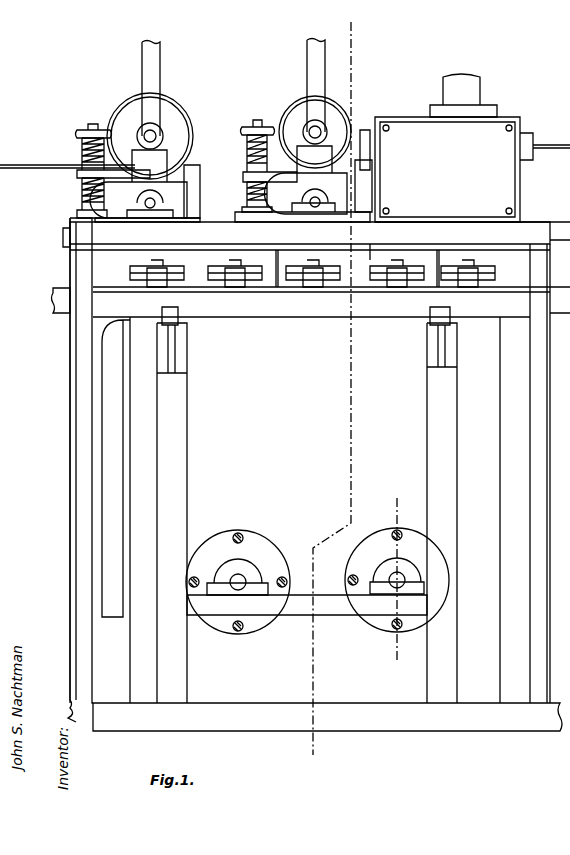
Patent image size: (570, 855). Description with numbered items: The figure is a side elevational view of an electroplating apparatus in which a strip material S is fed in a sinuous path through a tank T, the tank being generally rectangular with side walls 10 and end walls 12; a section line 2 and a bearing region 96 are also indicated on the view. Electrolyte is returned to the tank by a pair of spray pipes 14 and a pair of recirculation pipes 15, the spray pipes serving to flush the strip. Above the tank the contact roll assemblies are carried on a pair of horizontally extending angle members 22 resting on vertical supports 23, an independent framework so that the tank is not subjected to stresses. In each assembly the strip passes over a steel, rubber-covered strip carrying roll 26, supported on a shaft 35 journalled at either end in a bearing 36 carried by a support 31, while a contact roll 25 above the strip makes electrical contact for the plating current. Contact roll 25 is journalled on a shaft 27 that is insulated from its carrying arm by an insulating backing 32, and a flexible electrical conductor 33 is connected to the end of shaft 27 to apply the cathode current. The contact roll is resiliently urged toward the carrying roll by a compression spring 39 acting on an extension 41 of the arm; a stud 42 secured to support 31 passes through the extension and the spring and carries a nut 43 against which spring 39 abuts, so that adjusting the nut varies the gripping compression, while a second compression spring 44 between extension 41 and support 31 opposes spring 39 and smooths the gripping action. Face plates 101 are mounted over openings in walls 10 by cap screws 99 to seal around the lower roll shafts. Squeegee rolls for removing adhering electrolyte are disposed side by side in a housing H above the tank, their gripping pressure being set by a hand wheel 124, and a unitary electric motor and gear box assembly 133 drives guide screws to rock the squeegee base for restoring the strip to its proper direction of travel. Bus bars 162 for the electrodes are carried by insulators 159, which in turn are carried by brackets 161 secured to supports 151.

The section line 2- 2 is at (340, 31).
The side walls 10 is at (384, 643).
The tank T is at (130, 689).
The spray pipes 14 is at (62, 246).
The bus bars 162 is at (304, 310).
The vertical supports 23 is at (70, 399).
The recirculation pipes 15 is at (102, 438).
The supports 151 is at (187, 447).
The insulators 159 is at (178, 318).
The brackets 161 is at (190, 360).
The face plates 101 is at (280, 548).
The cap screws 99 is at (240, 537).
The bearing 96 is at (232, 568).
The electrical conductor 33 is at (142, 62).
The contact roll 25 is at (166, 112).
The shaft 27 is at (182, 122).
The insulating backing 32 is at (168, 136).
The strip carrying roll 26 is at (170, 185).
The shaft 35 is at (148, 208).
The bearing 36 is at (165, 214).
The support 31 is at (190, 205).
The nut 43 is at (86, 128).
The compression spring 39 is at (80, 146).
The strip material S is at (26, 165).
The stud 42 is at (78, 174).
The extension 41 is at (80, 196).
The second compression spring 44 is at (80, 213).
The housing H is at (472, 169).
The angle members 22 is at (425, 228).
The electric motor and gear box assembly 133 is at (480, 78).
The hand wheel 124 is at (373, 146).
The end walls 12 is at (547, 516).